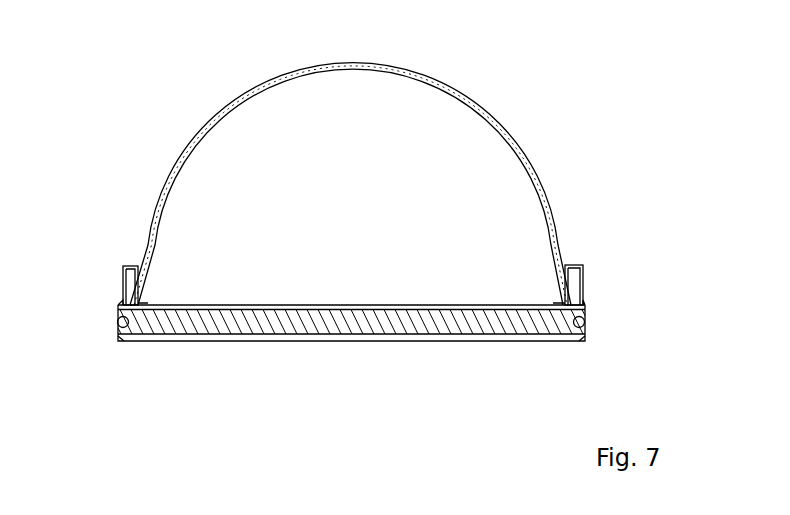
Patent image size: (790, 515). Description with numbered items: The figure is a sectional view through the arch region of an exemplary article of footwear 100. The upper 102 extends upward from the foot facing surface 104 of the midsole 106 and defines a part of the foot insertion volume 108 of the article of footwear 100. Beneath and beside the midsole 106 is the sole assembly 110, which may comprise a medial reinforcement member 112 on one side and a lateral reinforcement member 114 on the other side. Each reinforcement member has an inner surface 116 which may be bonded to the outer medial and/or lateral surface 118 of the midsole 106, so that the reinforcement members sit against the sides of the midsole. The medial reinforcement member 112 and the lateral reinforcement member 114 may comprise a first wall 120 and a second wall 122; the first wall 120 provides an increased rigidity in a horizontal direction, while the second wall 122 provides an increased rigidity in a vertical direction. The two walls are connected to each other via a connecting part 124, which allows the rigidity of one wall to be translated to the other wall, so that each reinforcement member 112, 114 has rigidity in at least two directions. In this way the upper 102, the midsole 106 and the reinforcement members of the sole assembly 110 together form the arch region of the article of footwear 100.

The article of footwear 100 is at (517, 71).
The upper 102 is at (247, 102).
The foot facing surface 104 is at (335, 300).
The midsole 106 is at (408, 345).
The foot insertion volume 108 is at (386, 217).
The sole assembly 110 is at (650, 210).
The medial reinforcement member 112 is at (127, 268).
The lateral reinforcement member 114 is at (578, 266).
The inner surface 116 is at (125, 290).
The outer medial and/or lateral surface 118 is at (138, 302).
The first wall 120 is at (118, 322).
The second wall 122 is at (122, 300).
The connecting part 124 is at (131, 340).